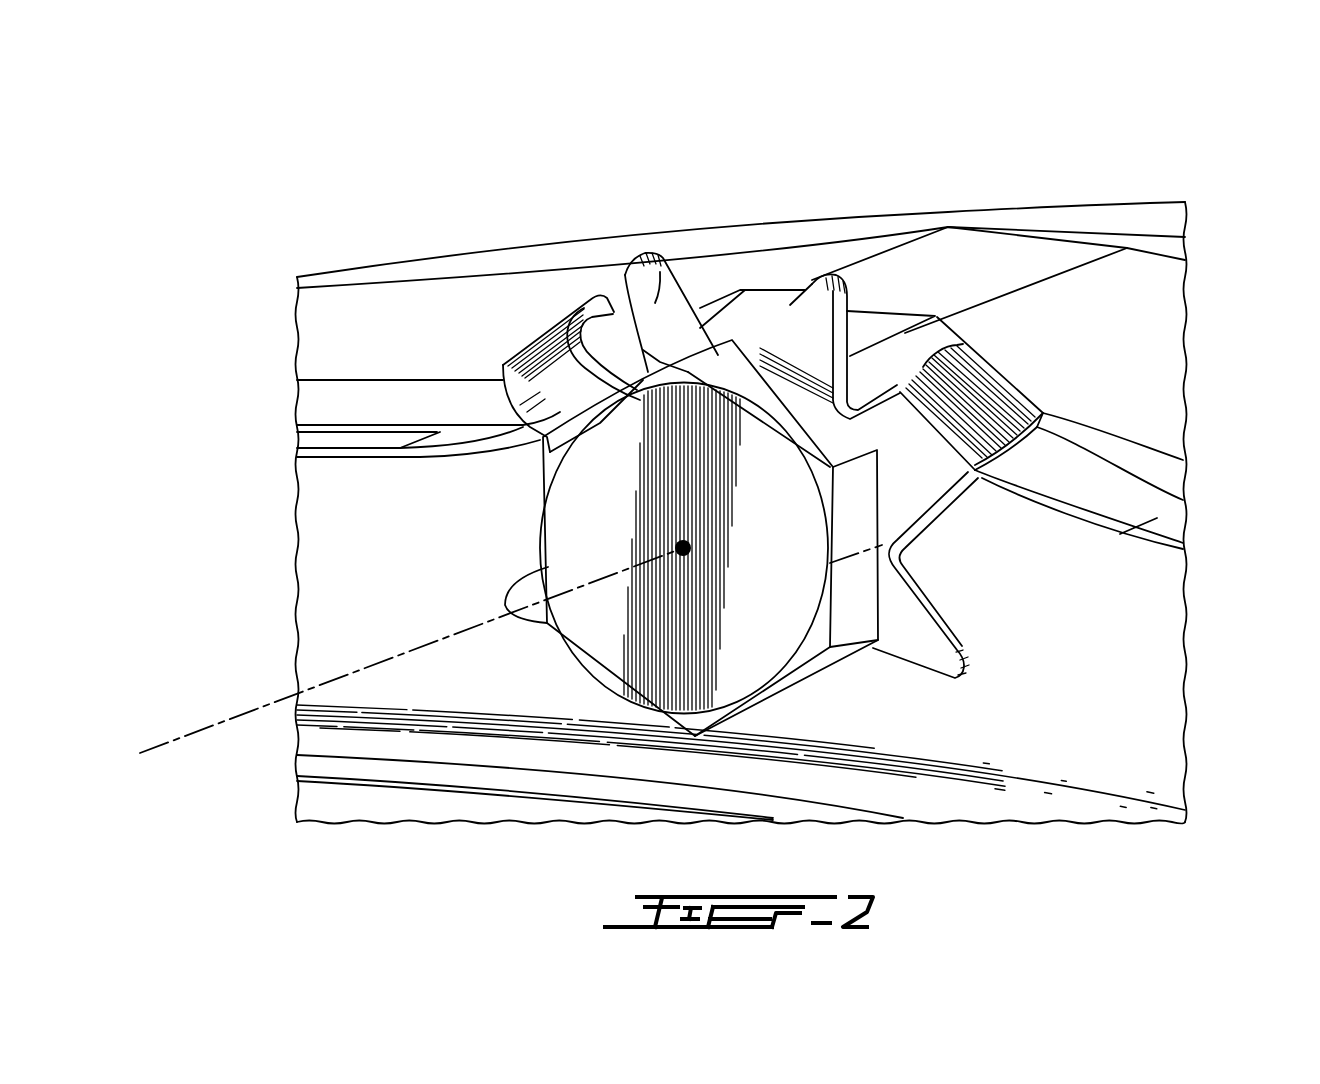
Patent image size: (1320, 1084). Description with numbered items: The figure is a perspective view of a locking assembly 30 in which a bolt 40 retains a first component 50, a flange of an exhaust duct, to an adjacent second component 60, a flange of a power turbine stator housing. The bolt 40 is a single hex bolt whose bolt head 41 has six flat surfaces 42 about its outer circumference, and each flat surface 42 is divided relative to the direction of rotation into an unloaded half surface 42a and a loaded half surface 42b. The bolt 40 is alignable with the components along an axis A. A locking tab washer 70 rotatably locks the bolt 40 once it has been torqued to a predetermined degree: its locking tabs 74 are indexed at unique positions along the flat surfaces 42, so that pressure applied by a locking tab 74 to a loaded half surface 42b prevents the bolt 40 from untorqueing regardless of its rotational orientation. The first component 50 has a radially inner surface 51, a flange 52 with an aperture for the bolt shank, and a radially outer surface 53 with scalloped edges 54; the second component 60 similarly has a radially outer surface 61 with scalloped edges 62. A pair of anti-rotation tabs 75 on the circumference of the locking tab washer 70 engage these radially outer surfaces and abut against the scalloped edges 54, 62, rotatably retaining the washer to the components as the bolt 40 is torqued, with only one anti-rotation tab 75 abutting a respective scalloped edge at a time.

The locking assembly 30 is at (404, 206).
The bolt 40 is at (528, 513).
The bolt head 41 is at (567, 552).
The flat surfaces 42 is at (742, 355).
The unloaded half surface 42a is at (860, 523).
The loaded half surface 42b is at (853, 632).
The first component 50 is at (1162, 563).
The radially inner surface 51 is at (1023, 800).
The flange 52 is at (1165, 632).
The radially outer surface 53 is at (764, 332).
The scalloped edges 54 is at (905, 365).
The second component 60 is at (1124, 459).
The radially outer surface 61 is at (862, 318).
The scalloped edges 62 is at (1057, 467).
The locking tab washer 70 is at (990, 684).
The locking tabs 74 is at (666, 305).
The anti-rotation tabs 75 is at (533, 352).
The axis A is at (499, 660).